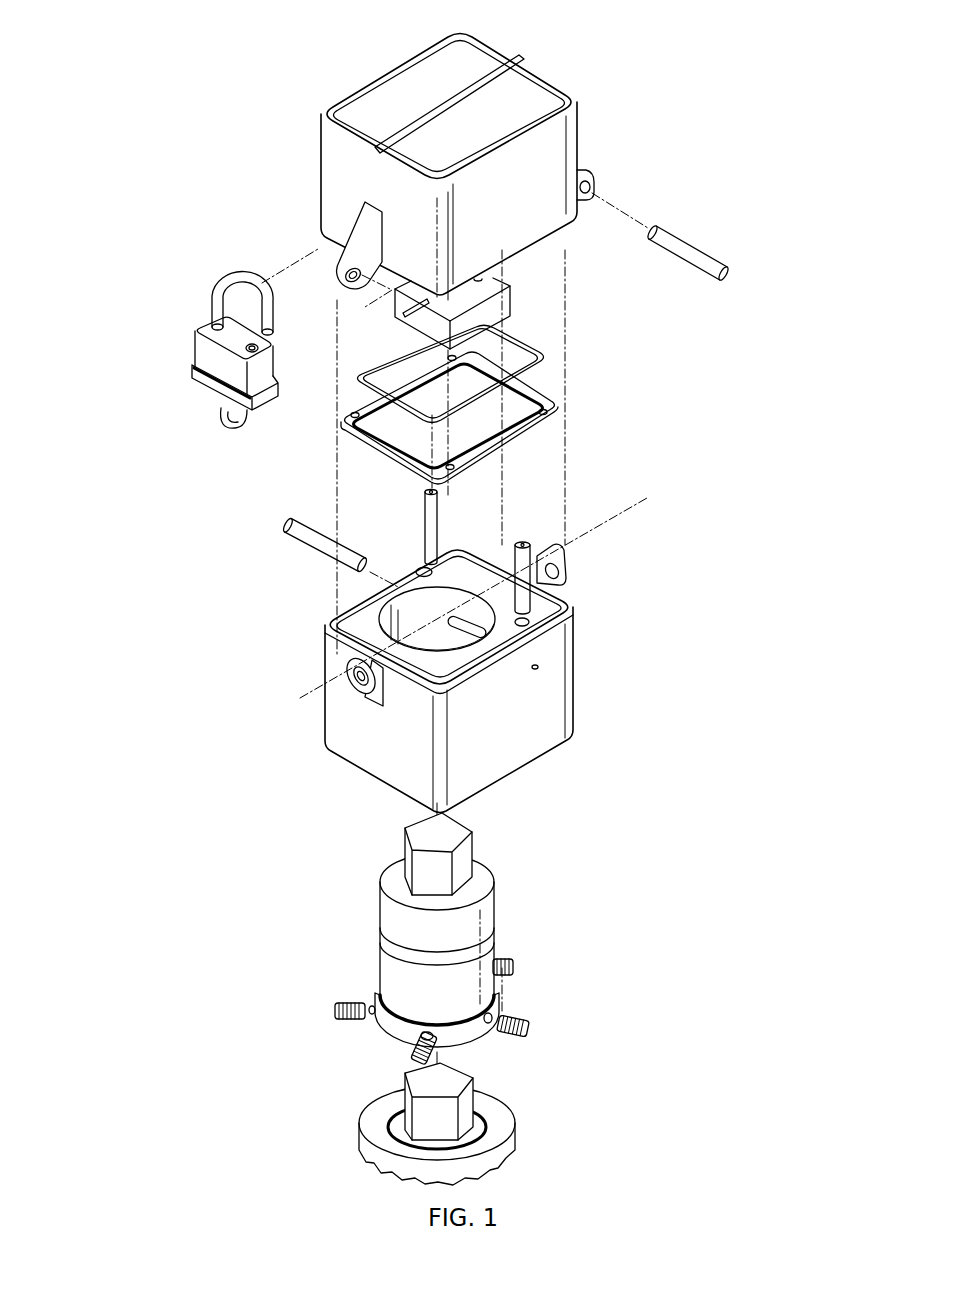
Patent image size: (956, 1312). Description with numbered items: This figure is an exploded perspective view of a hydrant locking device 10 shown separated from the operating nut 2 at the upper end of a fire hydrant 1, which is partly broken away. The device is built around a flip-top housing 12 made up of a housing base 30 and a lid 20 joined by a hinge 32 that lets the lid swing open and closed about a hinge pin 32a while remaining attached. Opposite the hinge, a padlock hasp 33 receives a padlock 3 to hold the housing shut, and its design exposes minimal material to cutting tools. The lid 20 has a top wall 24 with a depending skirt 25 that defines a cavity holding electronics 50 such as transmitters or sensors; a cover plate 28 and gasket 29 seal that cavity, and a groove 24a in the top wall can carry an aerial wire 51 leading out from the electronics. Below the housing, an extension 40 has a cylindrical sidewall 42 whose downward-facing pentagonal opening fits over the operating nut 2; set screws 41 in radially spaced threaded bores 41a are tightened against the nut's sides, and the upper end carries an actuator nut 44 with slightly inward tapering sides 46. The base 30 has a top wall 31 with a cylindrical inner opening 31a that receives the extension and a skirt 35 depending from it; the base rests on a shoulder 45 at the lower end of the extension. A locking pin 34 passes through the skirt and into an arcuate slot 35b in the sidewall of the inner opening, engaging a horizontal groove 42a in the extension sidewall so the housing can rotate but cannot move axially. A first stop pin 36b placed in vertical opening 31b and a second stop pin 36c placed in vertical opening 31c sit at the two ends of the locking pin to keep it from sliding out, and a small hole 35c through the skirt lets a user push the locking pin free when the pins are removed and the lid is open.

The fire hydrant 1 is at (530, 1138).
The operating nut 2 is at (647, 498).
The padlock 3 is at (182, 328).
The hydrant locking device 10 is at (150, 97).
The flip-top housing 12 is at (707, 120).
The lid 20 is at (595, 77).
The top wall 24 is at (372, 88).
The groove 24a is at (490, 75).
The depending skirt 25 is at (330, 150).
The cover plate 28 is at (559, 424).
The gasket 29 is at (540, 348).
The housing base 30 is at (640, 610).
The top wall 31 is at (433, 670).
The inner opening 31a is at (400, 605).
The vertical opening 31b is at (563, 603).
The vertical opening 31c is at (418, 570).
The hinge 32 is at (603, 173).
The hinge pin 32a is at (700, 247).
The padlock hasp 33 is at (322, 240).
The locking pin 34 is at (302, 518).
The skirt 35 is at (555, 725).
The arcuate slot 35b is at (467, 637).
The hole 35c is at (540, 668).
The first stop pin 36b is at (522, 548).
The second stop pin 36c is at (433, 528).
The extension 40 is at (555, 855).
The set screw 41 is at (510, 966).
The threaded bore 41a is at (488, 1018).
The cylindrical sidewall 42 is at (483, 910).
The groove 42a is at (483, 945).
The actuator nut 44 is at (480, 812).
The shoulder 45 is at (378, 997).
The tapering sides 46 is at (468, 865).
The electronics 50 is at (513, 293).
The aerial wire 51 is at (415, 305).